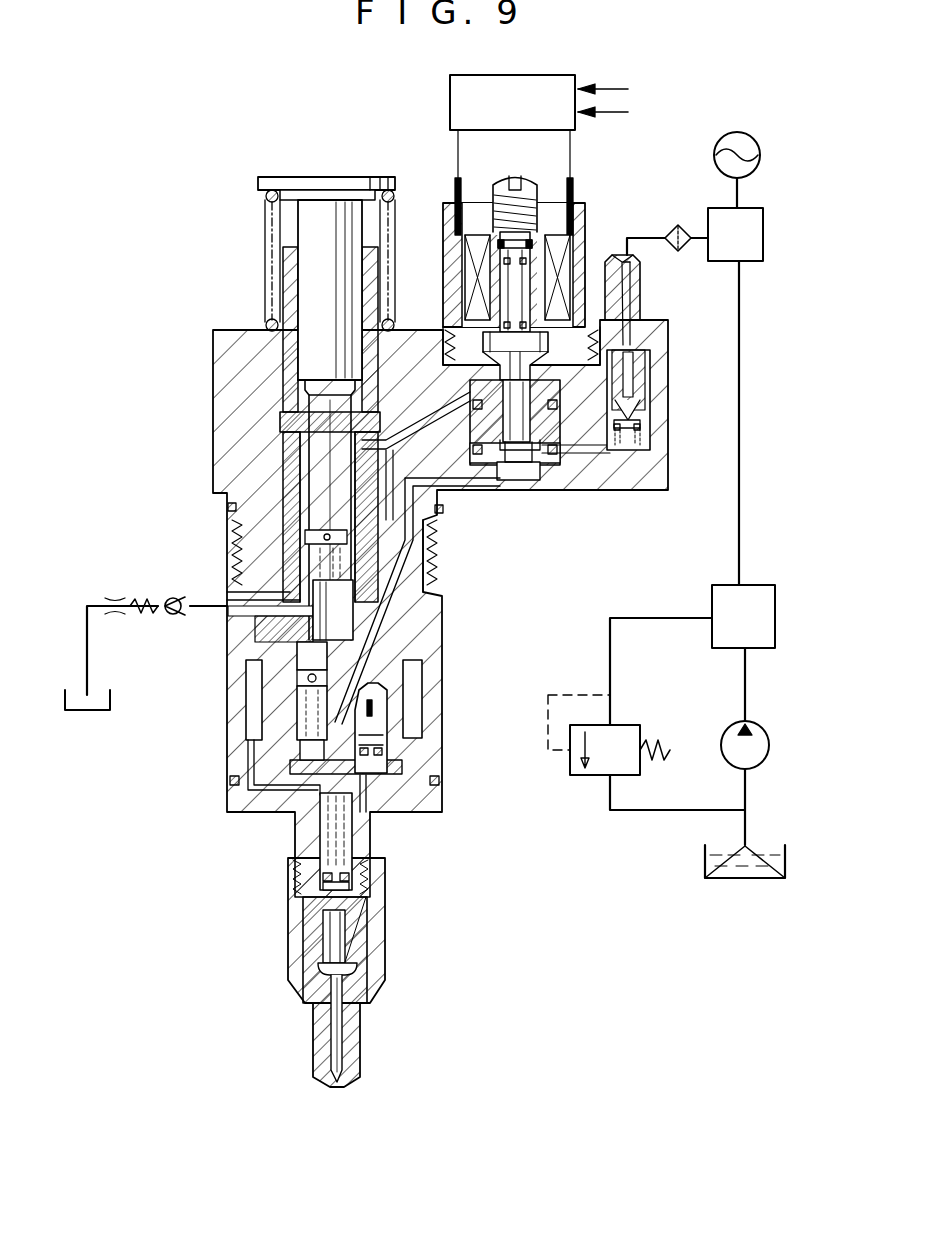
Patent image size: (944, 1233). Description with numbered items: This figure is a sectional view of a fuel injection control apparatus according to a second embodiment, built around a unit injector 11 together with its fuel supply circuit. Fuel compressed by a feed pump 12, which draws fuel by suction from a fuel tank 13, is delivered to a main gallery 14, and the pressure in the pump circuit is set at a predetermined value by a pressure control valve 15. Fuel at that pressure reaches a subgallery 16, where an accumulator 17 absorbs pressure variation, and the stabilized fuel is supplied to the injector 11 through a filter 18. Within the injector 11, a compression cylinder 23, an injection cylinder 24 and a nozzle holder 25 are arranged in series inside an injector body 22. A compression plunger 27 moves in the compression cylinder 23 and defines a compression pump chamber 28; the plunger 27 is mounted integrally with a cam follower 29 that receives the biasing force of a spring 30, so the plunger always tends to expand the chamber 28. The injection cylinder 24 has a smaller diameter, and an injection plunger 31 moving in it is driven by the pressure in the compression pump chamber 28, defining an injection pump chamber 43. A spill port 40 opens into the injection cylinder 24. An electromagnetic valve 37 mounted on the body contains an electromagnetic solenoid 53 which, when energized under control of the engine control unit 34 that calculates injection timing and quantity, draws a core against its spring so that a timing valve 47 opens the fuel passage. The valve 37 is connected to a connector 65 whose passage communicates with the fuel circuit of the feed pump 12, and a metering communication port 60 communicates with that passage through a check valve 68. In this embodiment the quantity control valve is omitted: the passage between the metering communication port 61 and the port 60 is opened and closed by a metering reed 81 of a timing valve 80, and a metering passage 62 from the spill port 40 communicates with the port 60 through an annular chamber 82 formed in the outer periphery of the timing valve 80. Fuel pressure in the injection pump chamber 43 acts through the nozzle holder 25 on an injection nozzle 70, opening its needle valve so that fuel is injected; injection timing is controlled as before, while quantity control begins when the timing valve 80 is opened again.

The unit injector 11 is at (176, 162).
The feed pump 12 is at (730, 733).
The fuel tank 13 is at (706, 863).
The main gallery 14 is at (716, 597).
The pressure control valve 15 is at (592, 776).
The subgallery 16 is at (718, 265).
The accumulator 17 is at (715, 165).
The filter 18 is at (672, 229).
The injector body 22 is at (232, 342).
The compression cylinder 23 is at (292, 447).
The injection cylinder 24 is at (347, 659).
The nozzle holder 25 is at (300, 838).
The compression plunger 27 is at (312, 401).
The compression pump chamber 28 is at (347, 620).
The cam follower 29 is at (343, 178).
The spring 30 is at (268, 236).
The injection plunger 31 is at (300, 661).
The electronic control unit 34 is at (451, 91).
The electromagnetic valve 37 is at (592, 188).
The spill port 40 is at (392, 718).
The injection pump chamber 43 is at (300, 753).
The timing valve 47 is at (480, 340).
The electromagnetic solenoid 53 is at (470, 250).
The metering communication port 60 is at (575, 450).
The metering communication port 61 is at (493, 462).
The metering passage 62 is at (436, 550).
The connector 65 is at (640, 278).
The check valve 68 is at (650, 396).
The injection nozzle 70 is at (360, 1075).
The timing valve 80 is at (538, 463).
The metering reed 81 is at (522, 465).
The annular chamber 82 is at (510, 465).